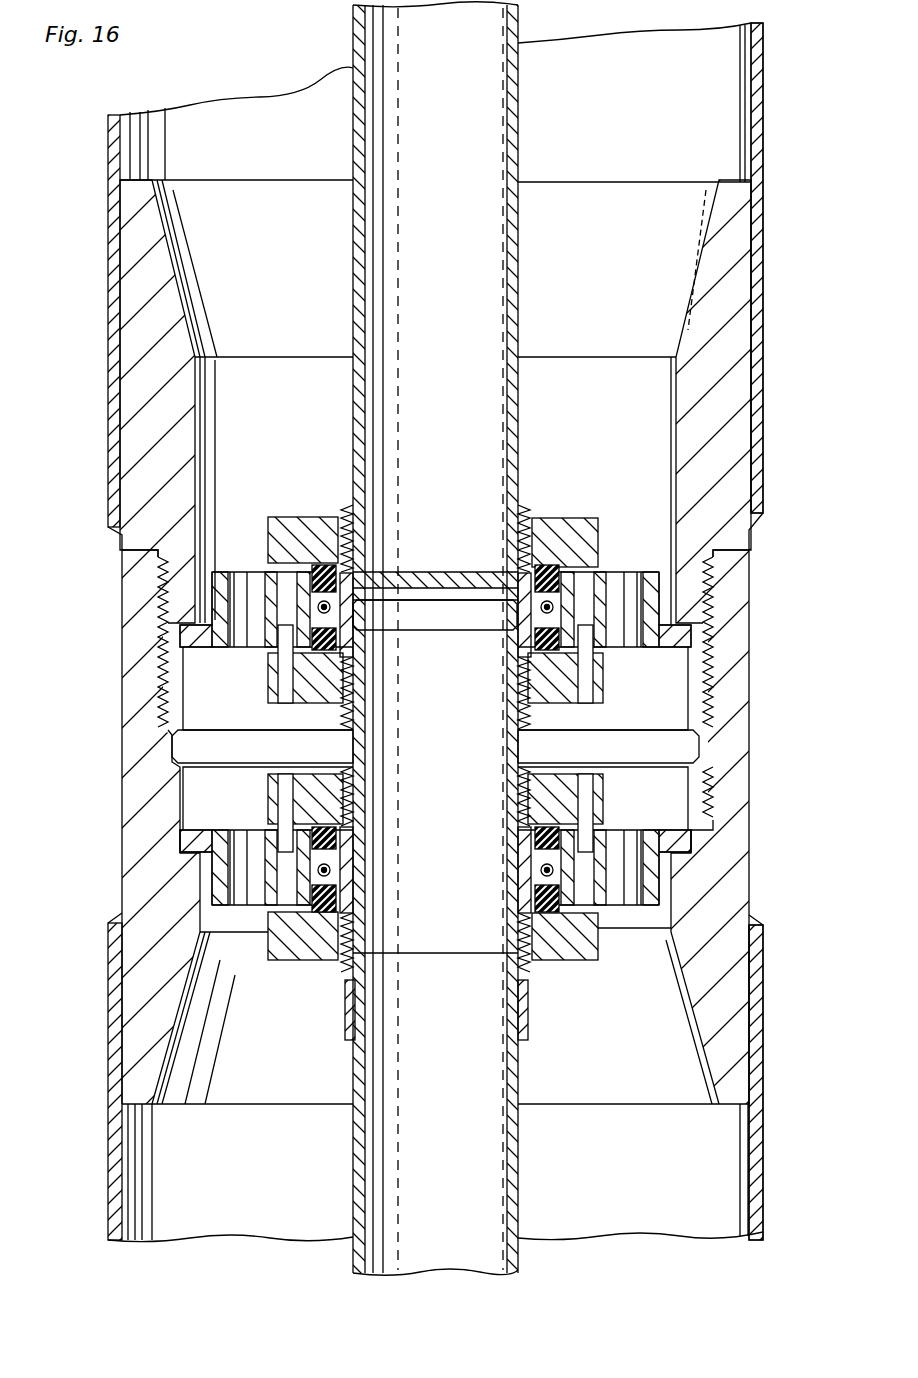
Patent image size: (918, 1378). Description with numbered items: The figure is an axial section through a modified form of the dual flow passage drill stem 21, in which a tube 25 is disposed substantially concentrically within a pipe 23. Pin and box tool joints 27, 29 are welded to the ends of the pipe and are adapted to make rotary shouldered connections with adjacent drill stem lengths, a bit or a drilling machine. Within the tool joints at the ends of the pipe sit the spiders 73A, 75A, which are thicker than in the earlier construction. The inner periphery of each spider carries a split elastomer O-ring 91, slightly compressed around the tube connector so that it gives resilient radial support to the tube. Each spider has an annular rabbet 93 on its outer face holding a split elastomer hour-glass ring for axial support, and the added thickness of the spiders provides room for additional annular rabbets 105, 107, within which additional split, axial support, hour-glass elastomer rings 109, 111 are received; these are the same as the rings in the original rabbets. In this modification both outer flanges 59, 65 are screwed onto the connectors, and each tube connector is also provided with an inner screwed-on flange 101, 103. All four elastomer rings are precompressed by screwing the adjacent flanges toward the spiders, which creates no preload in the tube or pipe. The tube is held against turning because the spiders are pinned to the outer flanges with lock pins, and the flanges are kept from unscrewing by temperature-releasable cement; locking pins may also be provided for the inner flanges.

The dual flow passage drill stem 21 is at (106, 137).
The pipe 23 is at (764, 1146).
The tube 25 is at (353, 40).
The pin tool joint 27 is at (751, 458).
The box tool joint 29 is at (743, 797).
The outer flange 59 is at (604, 805).
The outer flange 65 is at (604, 683).
The spider 73A is at (690, 837).
The spider 75A is at (690, 637).
The split elastomer O-ring 91 is at (540, 603).
The annular rabbet 93 is at (527, 630).
The inner screwed-on flange 101 is at (326, 527).
The inner screwed-on flange 103 is at (326, 963).
The additional annular rabbet 105 is at (533, 895).
The additional annular rabbet 107 is at (600, 590).
The additional hour-glass elastomer ring 109 is at (560, 925).
The additional hour-glass elastomer ring 111 is at (324, 563).